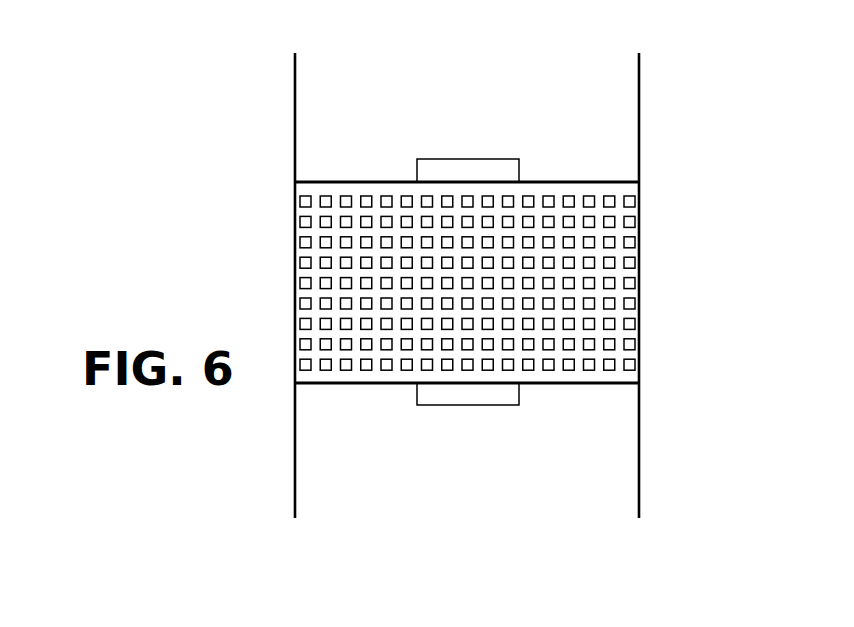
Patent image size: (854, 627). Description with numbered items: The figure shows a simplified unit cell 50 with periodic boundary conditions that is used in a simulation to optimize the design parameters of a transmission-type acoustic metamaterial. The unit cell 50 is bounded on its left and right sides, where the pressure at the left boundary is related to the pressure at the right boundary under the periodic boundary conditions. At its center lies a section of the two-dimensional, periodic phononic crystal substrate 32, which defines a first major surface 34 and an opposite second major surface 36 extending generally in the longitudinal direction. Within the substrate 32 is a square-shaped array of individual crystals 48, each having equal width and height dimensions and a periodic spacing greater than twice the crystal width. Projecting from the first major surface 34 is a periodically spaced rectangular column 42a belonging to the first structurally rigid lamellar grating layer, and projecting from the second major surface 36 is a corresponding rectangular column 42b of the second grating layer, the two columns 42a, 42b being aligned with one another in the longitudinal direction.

The simplified unit cell 50 is at (691, 144).
The two-dimensional, periodic phononic crystal substrate 32 is at (641, 288).
The first major surface 34 is at (559, 181).
The second major surface 36 is at (585, 385).
The periodically spaced rectangular column 42a is at (481, 163).
The periodically spaced rectangular column 42b is at (458, 405).
The individual crystal 48 is at (299, 204).